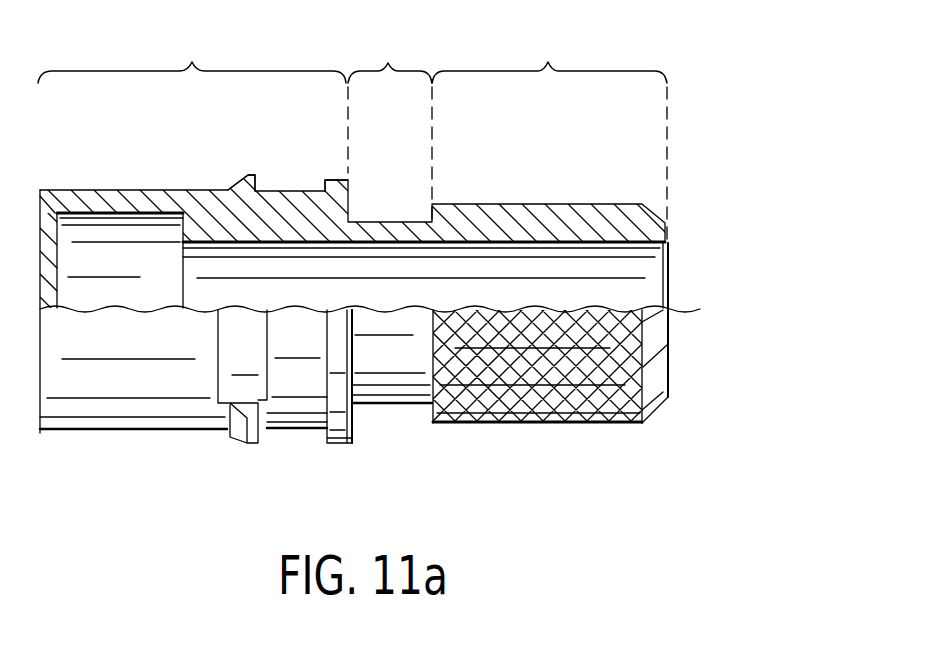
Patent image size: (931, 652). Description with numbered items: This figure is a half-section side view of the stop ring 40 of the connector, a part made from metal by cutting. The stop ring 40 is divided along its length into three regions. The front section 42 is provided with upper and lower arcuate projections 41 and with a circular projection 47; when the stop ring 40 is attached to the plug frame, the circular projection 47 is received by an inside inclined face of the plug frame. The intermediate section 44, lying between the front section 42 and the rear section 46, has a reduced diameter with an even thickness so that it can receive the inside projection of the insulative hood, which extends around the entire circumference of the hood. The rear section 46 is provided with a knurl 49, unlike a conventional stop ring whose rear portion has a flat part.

The stop ring 40 is at (427, 268).
The arcuate projections 41 is at (248, 175).
The front section 42 is at (195, 231).
The intermediate section 44 is at (390, 211).
The rear section 46 is at (488, 267).
The circular projection 47 is at (327, 178).
The knurl 49 is at (545, 400).